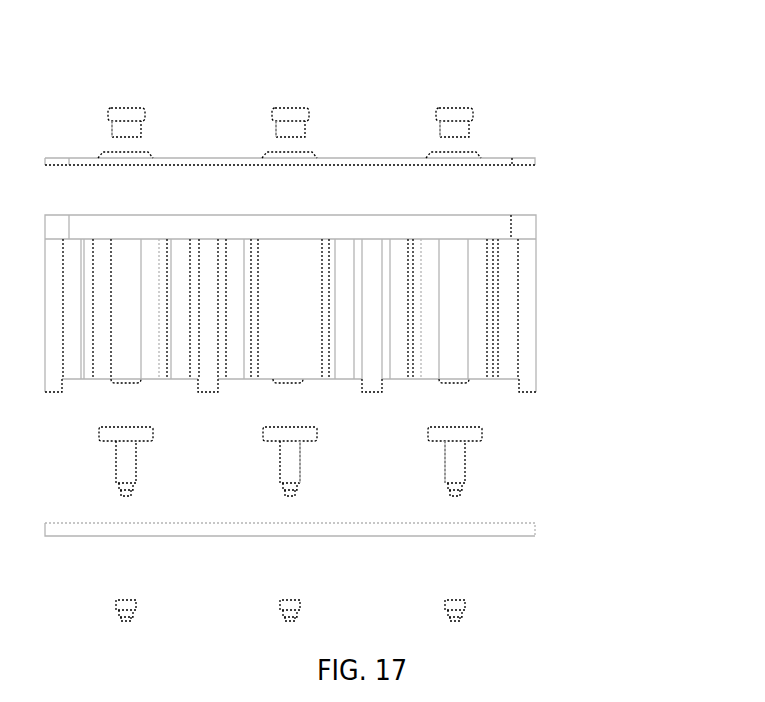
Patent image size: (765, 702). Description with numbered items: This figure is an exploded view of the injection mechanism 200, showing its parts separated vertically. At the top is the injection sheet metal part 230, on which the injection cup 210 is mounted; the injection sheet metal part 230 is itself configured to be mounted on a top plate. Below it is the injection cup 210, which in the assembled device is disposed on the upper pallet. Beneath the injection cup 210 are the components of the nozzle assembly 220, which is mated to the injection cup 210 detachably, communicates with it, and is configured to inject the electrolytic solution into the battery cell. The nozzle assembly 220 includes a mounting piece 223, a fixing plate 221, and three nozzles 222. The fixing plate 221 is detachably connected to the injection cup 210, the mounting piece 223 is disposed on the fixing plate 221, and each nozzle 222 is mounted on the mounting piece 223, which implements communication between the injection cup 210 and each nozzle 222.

The injection mechanism 200 is at (291, 39).
The injection cup 210 is at (512, 307).
The nozzle assembly 220 is at (620, 410).
The fixing plate 221 is at (533, 522).
The nozzle 222 is at (467, 608).
The mounting piece 223 is at (454, 445).
The injection sheet metal part 230 is at (525, 162).